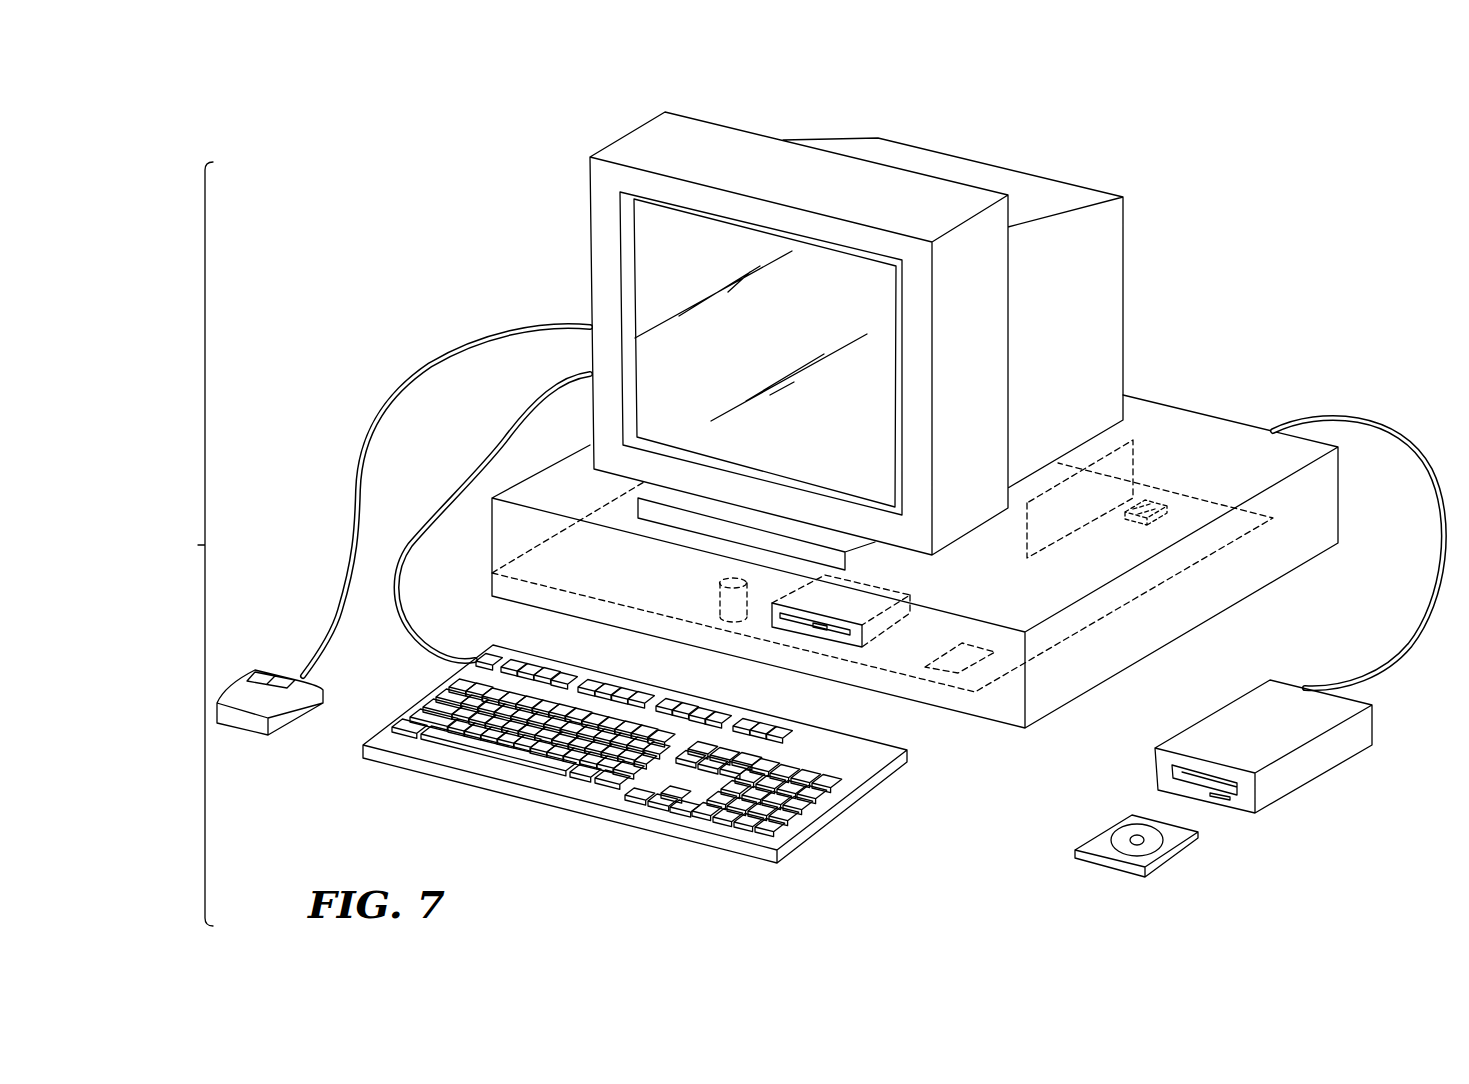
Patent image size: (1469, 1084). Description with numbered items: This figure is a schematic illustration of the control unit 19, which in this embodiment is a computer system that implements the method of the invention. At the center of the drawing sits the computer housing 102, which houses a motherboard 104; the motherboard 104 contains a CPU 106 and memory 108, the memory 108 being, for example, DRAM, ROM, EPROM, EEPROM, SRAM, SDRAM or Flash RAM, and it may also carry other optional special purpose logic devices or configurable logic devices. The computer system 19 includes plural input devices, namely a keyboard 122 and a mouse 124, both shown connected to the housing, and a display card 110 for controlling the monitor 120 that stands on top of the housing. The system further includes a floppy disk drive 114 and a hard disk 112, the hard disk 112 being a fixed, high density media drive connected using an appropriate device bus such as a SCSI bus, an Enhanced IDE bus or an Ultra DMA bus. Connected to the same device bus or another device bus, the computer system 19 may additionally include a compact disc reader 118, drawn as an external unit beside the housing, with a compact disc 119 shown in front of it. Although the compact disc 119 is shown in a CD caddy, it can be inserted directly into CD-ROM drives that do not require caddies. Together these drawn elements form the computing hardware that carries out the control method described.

The control unit 19 is at (189, 544).
The computer housing 102 is at (1197, 428).
The motherboard 104 is at (1195, 503).
The CPU 106 is at (972, 697).
The memory 108 is at (1150, 507).
The display card 110 is at (1107, 460).
The hard disk 112 is at (718, 585).
The floppy disk drive 114 is at (860, 637).
The compact disc reader 118 is at (1313, 773).
The compact disc 119 is at (1155, 845).
The monitor 120 is at (988, 172).
The keyboard 122 is at (863, 805).
The mouse 124 is at (248, 683).